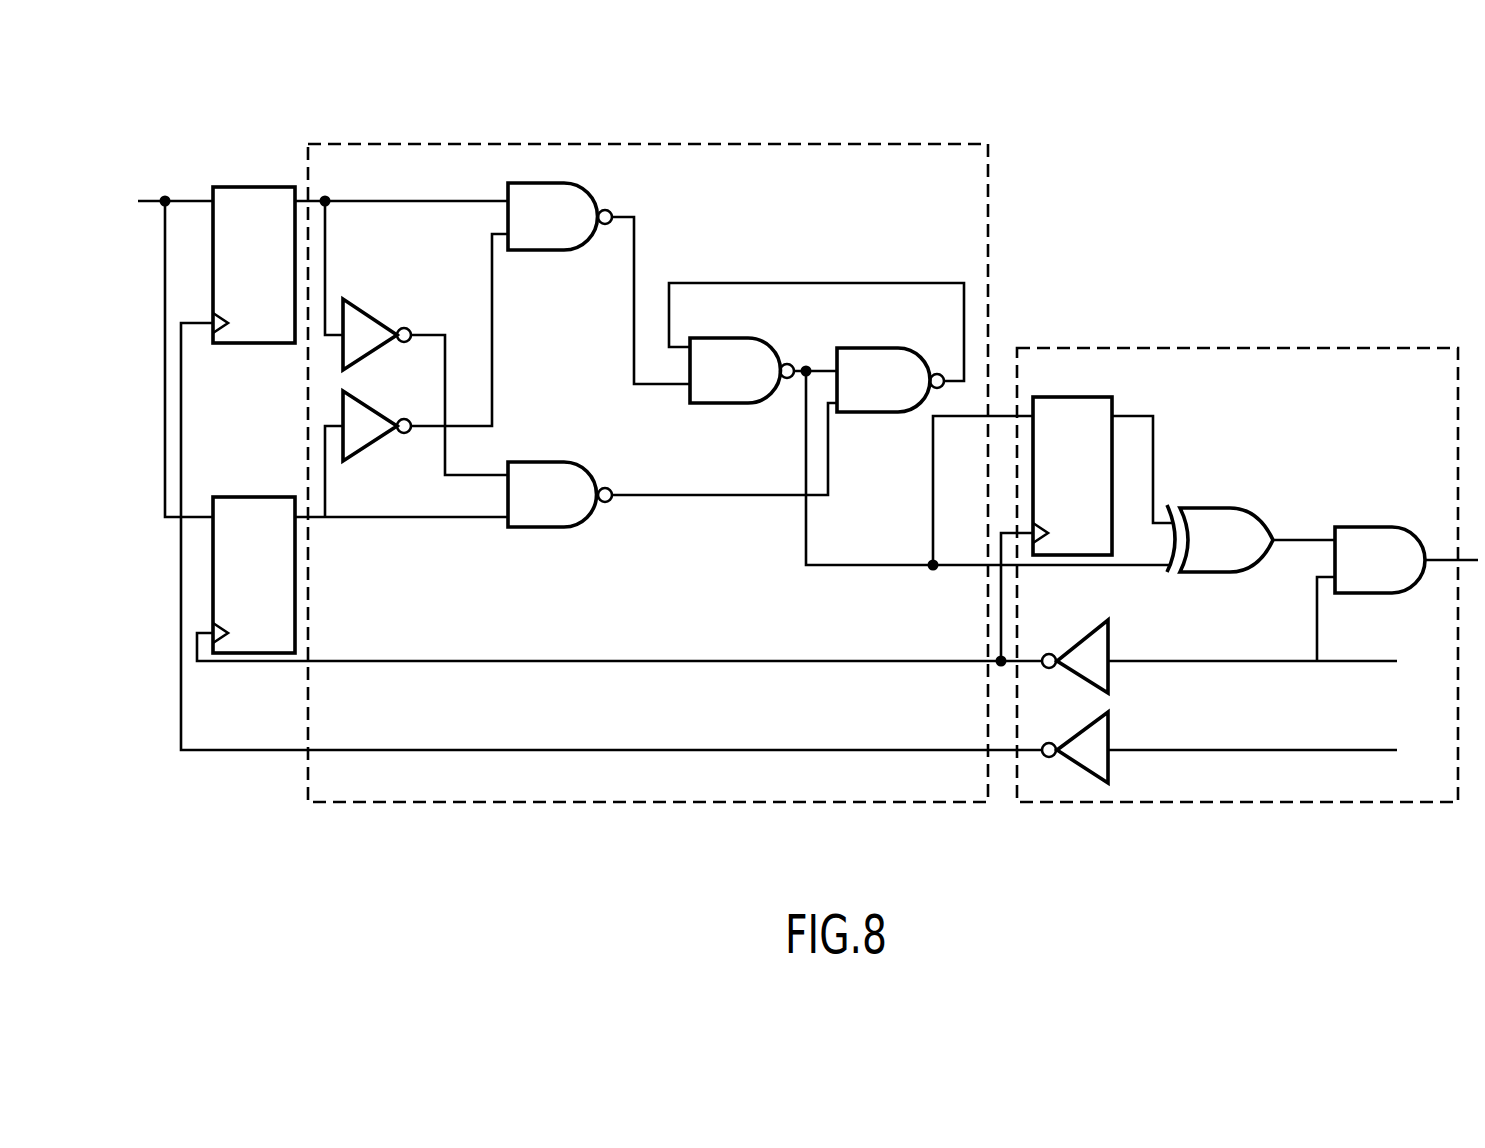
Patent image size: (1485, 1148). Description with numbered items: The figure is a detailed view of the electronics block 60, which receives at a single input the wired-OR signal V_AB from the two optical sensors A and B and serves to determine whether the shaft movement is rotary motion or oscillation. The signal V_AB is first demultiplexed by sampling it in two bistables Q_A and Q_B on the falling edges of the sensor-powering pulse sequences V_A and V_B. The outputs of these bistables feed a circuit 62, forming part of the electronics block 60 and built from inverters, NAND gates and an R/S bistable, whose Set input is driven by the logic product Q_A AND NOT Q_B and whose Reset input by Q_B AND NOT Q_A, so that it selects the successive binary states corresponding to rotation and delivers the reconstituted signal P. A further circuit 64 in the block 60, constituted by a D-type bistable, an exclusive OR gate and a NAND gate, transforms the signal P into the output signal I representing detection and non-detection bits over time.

The electronics block 60 is at (307, 853).
The circuit 62 is at (677, 142).
The circuit 64 is at (1123, 348).